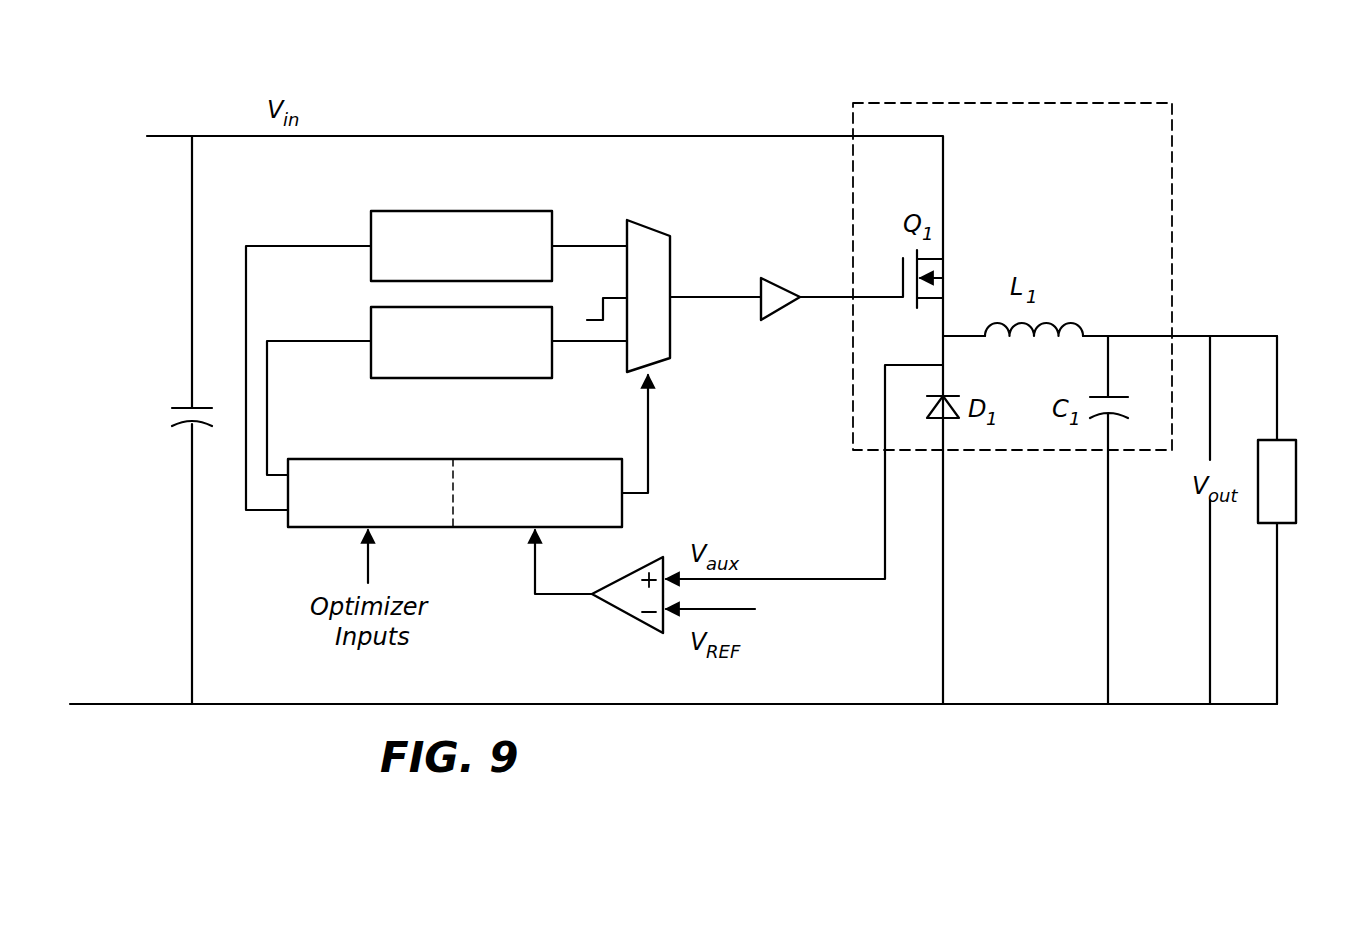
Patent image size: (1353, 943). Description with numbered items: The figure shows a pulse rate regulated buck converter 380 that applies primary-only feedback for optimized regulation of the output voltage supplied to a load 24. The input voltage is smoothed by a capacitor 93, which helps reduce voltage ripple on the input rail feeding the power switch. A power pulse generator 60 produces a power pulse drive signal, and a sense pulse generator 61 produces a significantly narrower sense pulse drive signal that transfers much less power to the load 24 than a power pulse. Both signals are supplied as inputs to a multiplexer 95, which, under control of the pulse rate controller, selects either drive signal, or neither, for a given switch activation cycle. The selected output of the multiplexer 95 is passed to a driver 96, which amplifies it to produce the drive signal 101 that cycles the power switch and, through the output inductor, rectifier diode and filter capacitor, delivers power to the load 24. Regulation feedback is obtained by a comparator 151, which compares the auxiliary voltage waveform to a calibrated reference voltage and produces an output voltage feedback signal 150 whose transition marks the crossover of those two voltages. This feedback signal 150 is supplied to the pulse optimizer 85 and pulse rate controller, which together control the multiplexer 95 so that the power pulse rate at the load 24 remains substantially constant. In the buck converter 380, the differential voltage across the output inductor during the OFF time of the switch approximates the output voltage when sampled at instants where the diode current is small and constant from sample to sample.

The converter 380 is at (462, 98).
The capacitor 93 is at (176, 410).
The power pulse generator 60 is at (486, 211).
The sense pulse generator 61 is at (470, 378).
The pulse optimizer 85 is at (358, 459).
The multiplexer 95 is at (645, 220).
The drive signal 101 is at (718, 296).
The driver 96 is at (781, 278).
The output voltage feedback signal 150 is at (534, 574).
The comparator 151 is at (627, 617).
The load 24 is at (1296, 486).